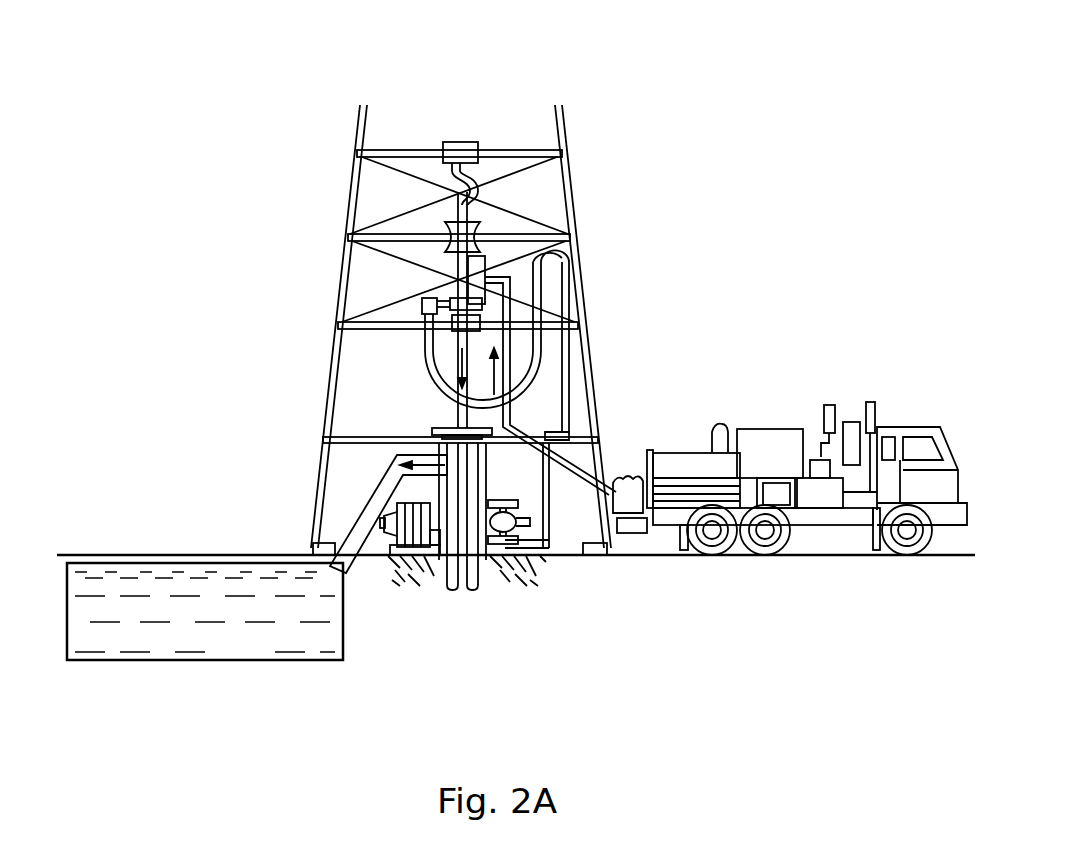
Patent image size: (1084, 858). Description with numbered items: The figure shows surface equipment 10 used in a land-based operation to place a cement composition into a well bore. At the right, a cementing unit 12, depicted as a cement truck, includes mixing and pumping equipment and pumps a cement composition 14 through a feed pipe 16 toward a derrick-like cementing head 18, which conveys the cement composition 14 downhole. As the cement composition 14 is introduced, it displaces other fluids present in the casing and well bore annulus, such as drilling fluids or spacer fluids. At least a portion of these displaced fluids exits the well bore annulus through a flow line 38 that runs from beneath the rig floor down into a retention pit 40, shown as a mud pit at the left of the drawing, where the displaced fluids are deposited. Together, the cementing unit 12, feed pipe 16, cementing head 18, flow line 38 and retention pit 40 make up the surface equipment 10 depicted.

The surface equipment 10 is at (714, 150).
The cementing unit 12 is at (817, 534).
The cement composition 14 is at (440, 362).
The feed pipe 16 is at (572, 443).
The cementing head 18 is at (504, 222).
The flow line 38 is at (360, 507).
The retention pit 40 is at (212, 662).